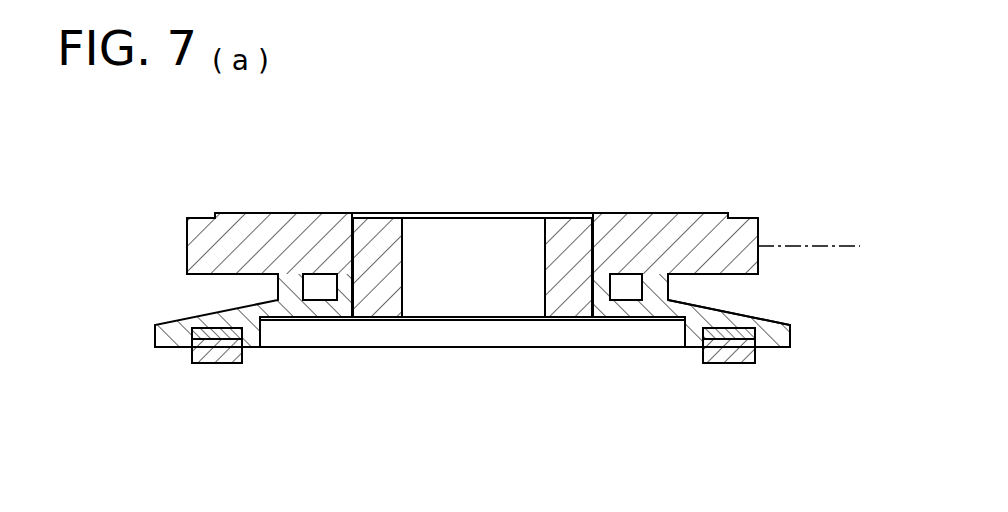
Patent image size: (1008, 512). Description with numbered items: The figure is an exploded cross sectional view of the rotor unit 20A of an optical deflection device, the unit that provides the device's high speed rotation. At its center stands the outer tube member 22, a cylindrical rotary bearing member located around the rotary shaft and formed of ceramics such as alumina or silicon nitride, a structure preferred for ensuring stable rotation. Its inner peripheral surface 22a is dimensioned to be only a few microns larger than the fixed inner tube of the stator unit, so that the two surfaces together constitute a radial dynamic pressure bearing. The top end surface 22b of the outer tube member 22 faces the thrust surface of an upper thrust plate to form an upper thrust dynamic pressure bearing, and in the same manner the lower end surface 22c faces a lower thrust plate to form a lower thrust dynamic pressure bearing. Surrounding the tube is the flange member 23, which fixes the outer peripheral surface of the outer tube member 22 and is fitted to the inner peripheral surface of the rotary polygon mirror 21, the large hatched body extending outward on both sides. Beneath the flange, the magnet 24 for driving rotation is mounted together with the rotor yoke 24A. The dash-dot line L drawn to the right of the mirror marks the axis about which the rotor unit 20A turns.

The rotor unit 20A is at (470, 163).
The rotary polygon mirror 21 is at (733, 215).
The outer tube member 22 is at (380, 225).
The inner peripheral surface 22a is at (540, 247).
The top end surface 22b is at (567, 225).
The lower end surface 22c is at (558, 317).
The flange member 23 is at (792, 336).
The magnet 24 is at (213, 363).
The rotor yoke 24A is at (192, 337).
The rotation axis line L is at (812, 247).